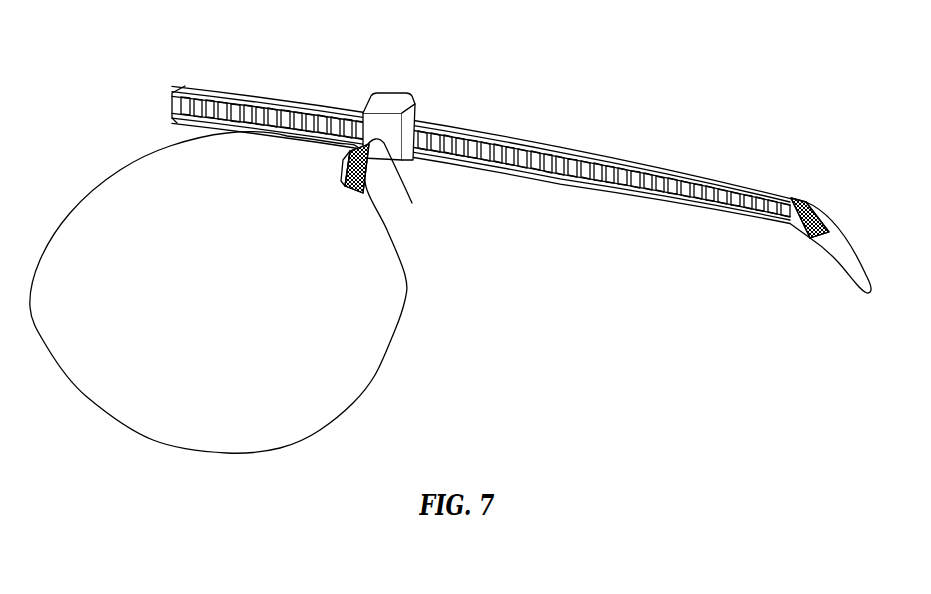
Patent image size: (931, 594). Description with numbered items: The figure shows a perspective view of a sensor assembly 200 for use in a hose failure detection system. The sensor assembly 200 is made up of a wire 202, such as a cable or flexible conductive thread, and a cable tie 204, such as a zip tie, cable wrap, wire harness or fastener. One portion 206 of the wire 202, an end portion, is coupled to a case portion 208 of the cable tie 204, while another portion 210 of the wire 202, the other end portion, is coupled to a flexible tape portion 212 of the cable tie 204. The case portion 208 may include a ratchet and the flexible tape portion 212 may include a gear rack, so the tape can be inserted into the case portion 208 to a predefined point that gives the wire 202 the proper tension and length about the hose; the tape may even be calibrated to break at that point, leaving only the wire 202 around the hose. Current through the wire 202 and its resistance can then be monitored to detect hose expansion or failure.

The sensor assembly 200 is at (557, 51).
The wire 202 is at (406, 276).
The cable tie 204 is at (440, 122).
The one portion 206 is at (387, 185).
The case portion 208 is at (397, 92).
The another portion 210 is at (814, 202).
The flexible tape portion 212 is at (852, 264).